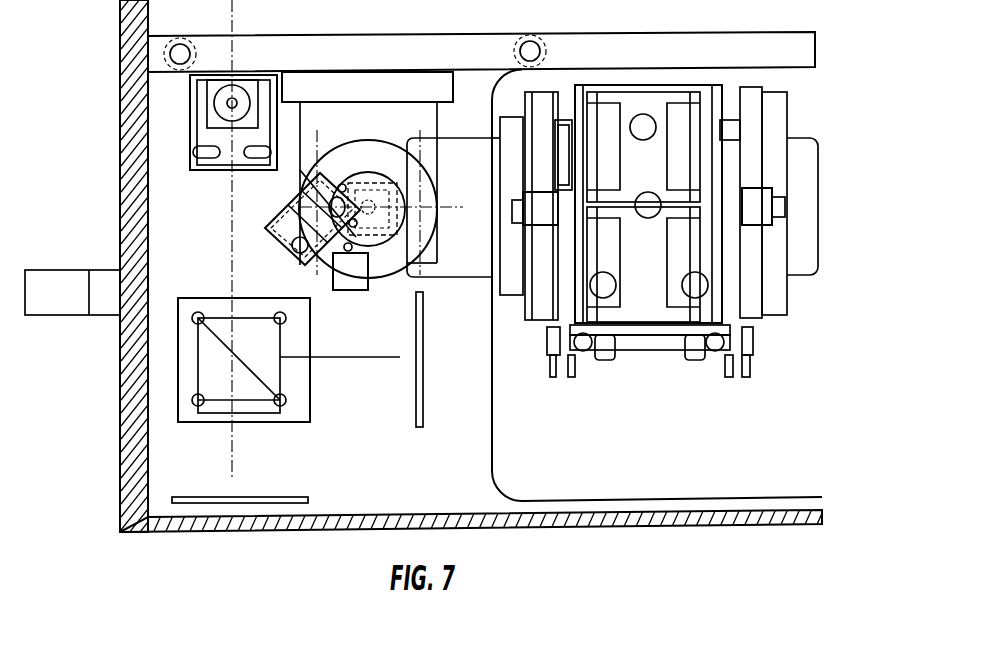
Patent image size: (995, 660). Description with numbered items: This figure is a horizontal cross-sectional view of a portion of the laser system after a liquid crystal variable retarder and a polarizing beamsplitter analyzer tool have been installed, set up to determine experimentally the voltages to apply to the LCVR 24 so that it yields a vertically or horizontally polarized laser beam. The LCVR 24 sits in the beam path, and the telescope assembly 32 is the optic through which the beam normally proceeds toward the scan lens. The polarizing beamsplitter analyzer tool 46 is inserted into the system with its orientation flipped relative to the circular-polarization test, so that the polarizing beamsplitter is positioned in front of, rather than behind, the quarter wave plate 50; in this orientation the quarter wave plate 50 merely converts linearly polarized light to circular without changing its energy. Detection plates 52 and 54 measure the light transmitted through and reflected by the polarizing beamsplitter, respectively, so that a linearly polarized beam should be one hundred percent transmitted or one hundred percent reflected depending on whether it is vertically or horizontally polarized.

The liquid crystal variable retarder 24 is at (188, 128).
The telescope assembly 32 is at (653, 353).
The polarizing beamsplitter analyzer tool 46 is at (193, 298).
The quarter wave plate 50 is at (209, 413).
The detection plate 52 is at (300, 496).
The detection plate 54 is at (418, 405).